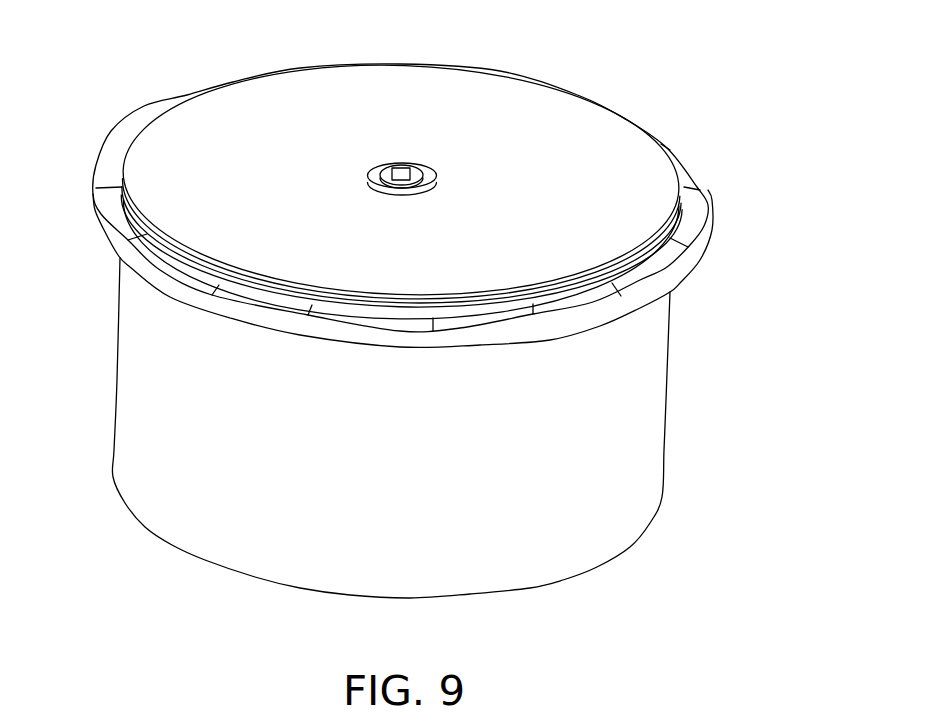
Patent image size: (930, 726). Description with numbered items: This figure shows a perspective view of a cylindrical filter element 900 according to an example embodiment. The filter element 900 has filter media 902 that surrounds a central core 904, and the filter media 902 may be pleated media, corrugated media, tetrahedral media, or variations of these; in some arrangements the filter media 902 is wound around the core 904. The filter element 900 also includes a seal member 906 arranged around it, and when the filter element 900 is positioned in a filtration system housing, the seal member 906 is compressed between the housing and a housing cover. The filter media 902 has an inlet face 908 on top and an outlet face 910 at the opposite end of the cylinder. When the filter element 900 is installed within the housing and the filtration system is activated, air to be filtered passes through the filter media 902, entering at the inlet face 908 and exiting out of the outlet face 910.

The filter element 900 is at (118, 87).
The filter media 902 is at (330, 83).
The central core 904 is at (418, 165).
The seal member 906 is at (695, 206).
The inlet face 908 is at (568, 228).
The outlet face 910 is at (548, 592).